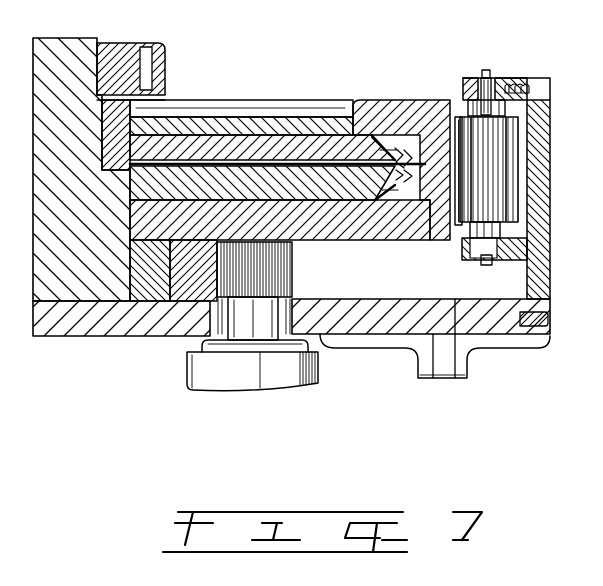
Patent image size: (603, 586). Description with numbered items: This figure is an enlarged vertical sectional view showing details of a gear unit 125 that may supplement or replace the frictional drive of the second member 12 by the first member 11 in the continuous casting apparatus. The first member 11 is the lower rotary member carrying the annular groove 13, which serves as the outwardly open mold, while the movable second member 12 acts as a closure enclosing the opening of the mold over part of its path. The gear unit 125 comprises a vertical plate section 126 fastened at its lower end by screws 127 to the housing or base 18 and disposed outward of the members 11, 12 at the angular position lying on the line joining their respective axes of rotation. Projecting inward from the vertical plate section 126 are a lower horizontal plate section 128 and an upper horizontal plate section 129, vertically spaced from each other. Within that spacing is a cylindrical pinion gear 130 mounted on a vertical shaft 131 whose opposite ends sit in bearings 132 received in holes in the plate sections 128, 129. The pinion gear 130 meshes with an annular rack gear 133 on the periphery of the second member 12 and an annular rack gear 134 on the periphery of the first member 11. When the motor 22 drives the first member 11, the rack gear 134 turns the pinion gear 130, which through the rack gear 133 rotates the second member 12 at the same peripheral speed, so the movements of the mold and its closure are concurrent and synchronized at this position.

The first member 11 is at (313, 188).
The second member 12 is at (400, 105).
The annular groove 13 is at (415, 170).
The housing 18 is at (320, 335).
The motor 22 is at (311, 381).
The gear unit 125 is at (558, 72).
The vertical plate section 126 is at (540, 248).
The screws 127 is at (544, 322).
The lower horizontal plate section 128 is at (510, 258).
The upper horizontal plate section 129 is at (518, 79).
The cylindrical pinion gear 130 is at (460, 135).
The vertical shaft 131 is at (485, 70).
The bearings 132 is at (472, 83).
The annular rack gear 133 is at (455, 146).
The annular rack gear 134 is at (455, 193).